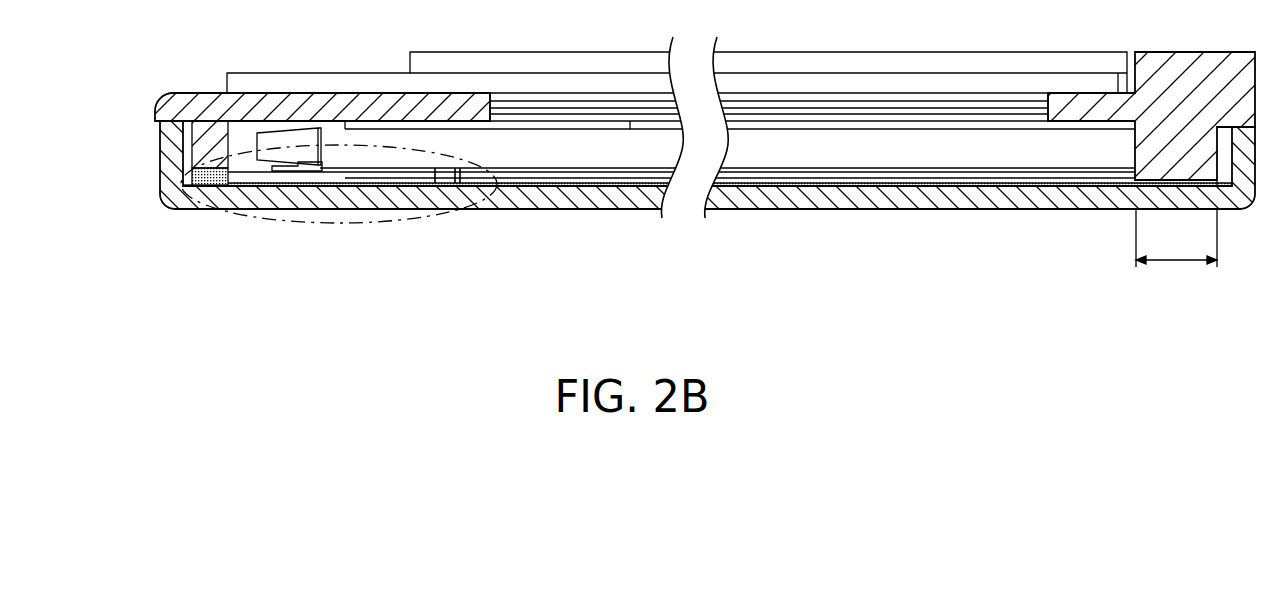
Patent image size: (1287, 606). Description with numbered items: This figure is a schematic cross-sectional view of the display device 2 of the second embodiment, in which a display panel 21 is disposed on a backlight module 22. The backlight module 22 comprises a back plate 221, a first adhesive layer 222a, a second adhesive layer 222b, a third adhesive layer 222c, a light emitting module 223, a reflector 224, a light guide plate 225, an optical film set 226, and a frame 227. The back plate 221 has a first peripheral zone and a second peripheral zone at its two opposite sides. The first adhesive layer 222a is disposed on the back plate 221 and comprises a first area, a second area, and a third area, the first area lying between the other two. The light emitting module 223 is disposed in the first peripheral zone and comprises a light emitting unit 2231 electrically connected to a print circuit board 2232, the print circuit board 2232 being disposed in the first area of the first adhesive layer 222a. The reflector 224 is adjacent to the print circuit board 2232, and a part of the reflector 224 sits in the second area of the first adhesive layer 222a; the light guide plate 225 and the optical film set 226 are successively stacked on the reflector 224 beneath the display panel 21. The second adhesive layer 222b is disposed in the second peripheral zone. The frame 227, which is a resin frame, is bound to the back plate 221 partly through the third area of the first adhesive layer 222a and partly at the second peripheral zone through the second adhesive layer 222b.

The display device 2 is at (82, 33).
The display panel 21 is at (941, 85).
The backlight module 22 is at (208, 305).
The back plate 221 is at (752, 206).
The first adhesive layer 222a is at (196, 188).
The second adhesive layer 222b is at (1117, 184).
The third adhesive layer 222c is at (436, 170).
The light emitting module 223 is at (255, 257).
The light emitting unit 2231 is at (284, 152).
The print circuit board 2232 is at (380, 178).
The reflector 224 is at (843, 173).
The light guide plate 225 is at (936, 145).
The optical film set 226 is at (1000, 108).
The frame 227 is at (215, 158).